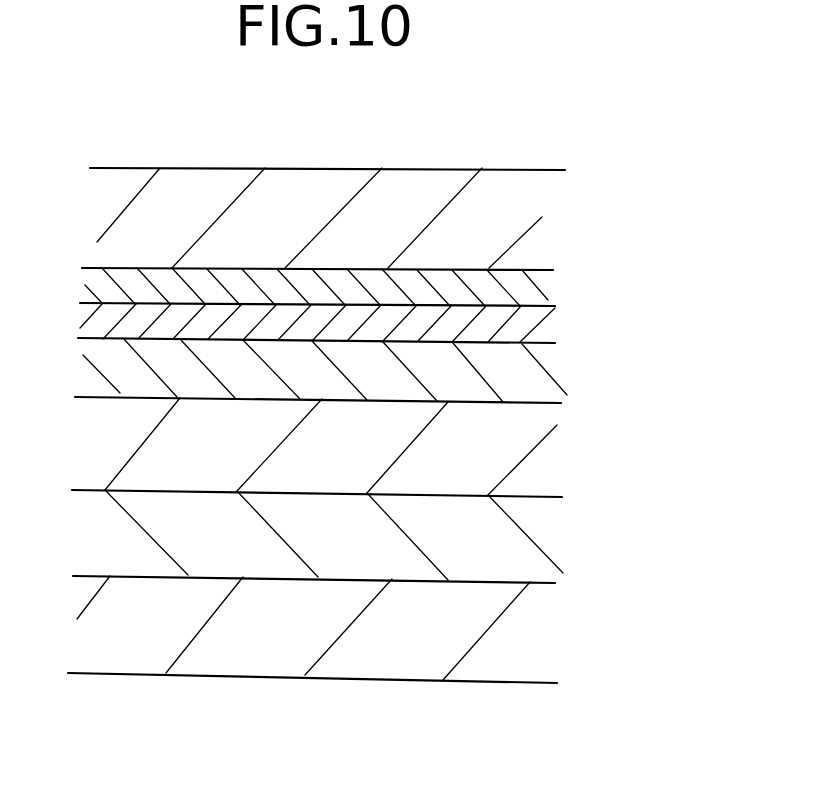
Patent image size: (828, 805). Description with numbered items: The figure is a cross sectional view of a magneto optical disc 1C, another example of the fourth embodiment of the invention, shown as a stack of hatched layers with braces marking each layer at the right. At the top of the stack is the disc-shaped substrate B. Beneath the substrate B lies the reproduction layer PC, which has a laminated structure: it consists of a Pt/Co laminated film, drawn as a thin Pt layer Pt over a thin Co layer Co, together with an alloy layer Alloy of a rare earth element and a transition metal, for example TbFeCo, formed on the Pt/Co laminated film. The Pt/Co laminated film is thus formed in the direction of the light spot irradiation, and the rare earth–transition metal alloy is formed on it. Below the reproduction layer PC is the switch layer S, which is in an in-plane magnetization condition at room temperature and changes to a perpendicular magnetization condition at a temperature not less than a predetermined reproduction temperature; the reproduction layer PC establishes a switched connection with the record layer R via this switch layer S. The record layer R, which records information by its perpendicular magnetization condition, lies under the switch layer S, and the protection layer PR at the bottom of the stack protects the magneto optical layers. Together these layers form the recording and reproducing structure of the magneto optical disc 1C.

The magneto optical disc 1C is at (218, 177).
The substrate B is at (592, 257).
The Pt layer Pt is at (575, 267).
The Co layer Co is at (575, 310).
The alloy of rare earth element and transition metal Alloy is at (575, 353).
The reproduction layer PC is at (658, 268).
The switch layer S is at (590, 423).
The record layer R is at (590, 508).
The protection layer PR is at (590, 592).